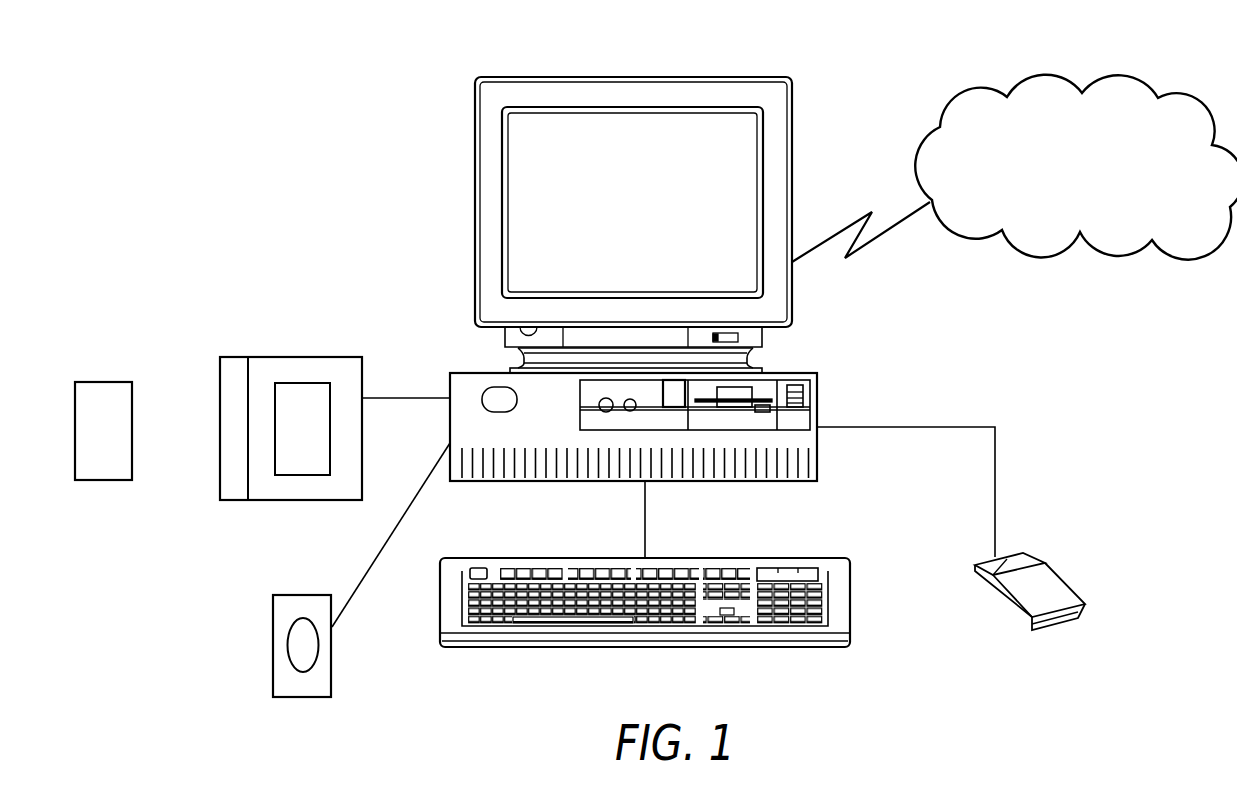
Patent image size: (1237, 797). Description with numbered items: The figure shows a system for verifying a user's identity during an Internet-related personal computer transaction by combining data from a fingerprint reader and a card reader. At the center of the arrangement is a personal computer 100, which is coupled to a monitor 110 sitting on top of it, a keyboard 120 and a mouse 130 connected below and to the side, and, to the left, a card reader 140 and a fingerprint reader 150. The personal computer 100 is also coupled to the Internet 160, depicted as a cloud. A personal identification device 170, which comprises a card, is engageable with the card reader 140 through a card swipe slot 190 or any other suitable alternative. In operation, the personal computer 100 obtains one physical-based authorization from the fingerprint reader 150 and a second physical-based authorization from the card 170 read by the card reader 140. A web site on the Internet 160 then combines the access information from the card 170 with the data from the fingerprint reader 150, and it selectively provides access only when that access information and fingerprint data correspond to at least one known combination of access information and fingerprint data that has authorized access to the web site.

The personal computer 100 is at (802, 373).
The monitor 110 is at (717, 77).
The keyboard 120 is at (730, 560).
The mouse 130 is at (1045, 580).
The card reader 140 is at (312, 357).
The fingerprint reader 150 is at (300, 595).
The Internet 160 is at (1020, 248).
The personal identification device 170 is at (103, 393).
The card swipe slot 190 is at (242, 387).